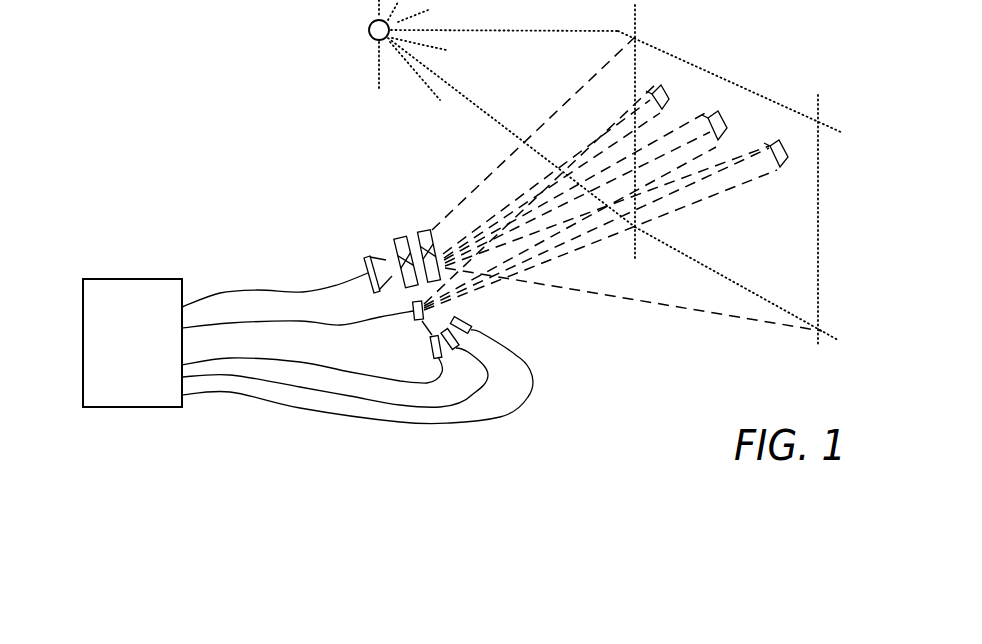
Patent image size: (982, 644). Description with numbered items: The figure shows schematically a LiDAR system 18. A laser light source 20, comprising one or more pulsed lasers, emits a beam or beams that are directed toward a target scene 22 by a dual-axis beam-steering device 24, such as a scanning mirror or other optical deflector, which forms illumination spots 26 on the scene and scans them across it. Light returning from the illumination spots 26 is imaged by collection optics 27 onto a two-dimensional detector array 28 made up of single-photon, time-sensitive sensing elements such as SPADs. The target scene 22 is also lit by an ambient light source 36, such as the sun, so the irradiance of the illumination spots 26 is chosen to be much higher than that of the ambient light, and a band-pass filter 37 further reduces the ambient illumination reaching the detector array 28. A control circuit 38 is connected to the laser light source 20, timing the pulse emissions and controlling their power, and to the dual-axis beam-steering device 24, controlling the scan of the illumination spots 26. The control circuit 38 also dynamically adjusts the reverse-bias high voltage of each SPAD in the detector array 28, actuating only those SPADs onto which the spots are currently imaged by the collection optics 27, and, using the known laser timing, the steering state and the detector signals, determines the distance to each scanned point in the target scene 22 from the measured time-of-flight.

The LiDAR system 18 is at (230, 54).
The laser light source 20 is at (492, 359).
The target scene 22 is at (803, 253).
The dual-axis beam-steering device 24 is at (412, 319).
The illumination spots 26 is at (660, 84).
The collection optics 27 is at (400, 237).
The two-dimensional detector array 28 is at (368, 256).
The ambient light source 36 is at (368, 29).
The band-pass filter 37 is at (420, 230).
The control circuit 38 is at (150, 348).